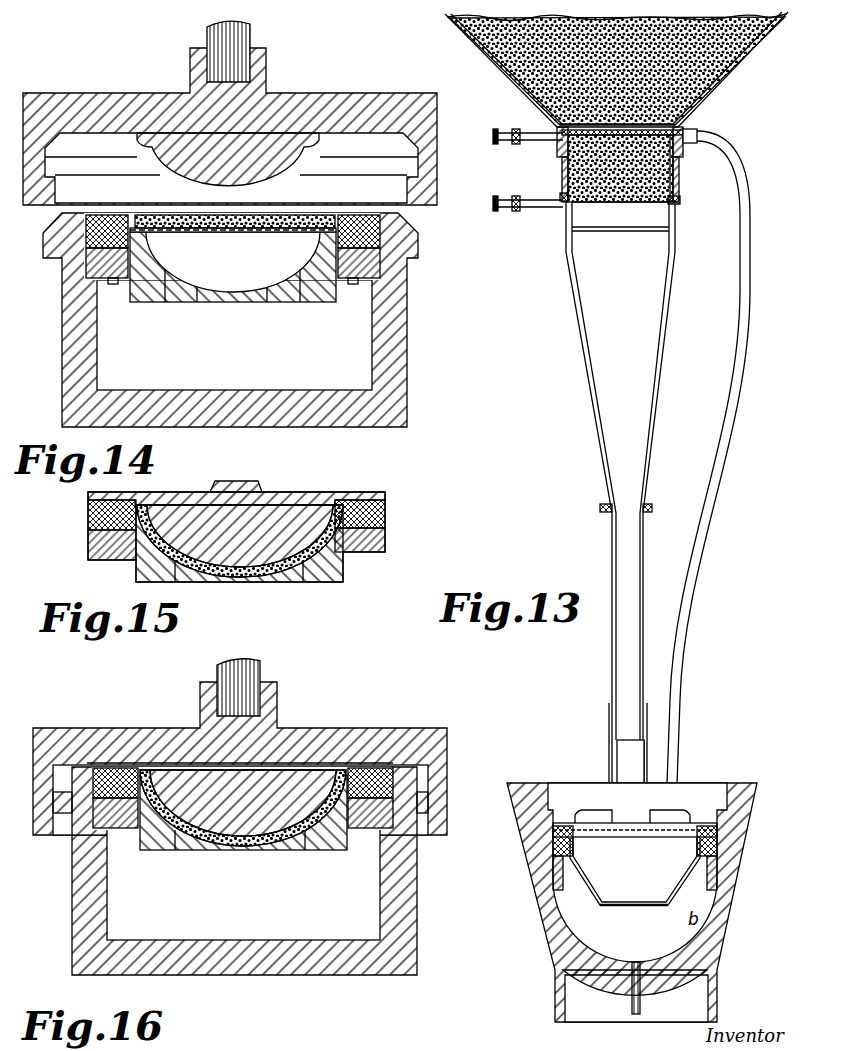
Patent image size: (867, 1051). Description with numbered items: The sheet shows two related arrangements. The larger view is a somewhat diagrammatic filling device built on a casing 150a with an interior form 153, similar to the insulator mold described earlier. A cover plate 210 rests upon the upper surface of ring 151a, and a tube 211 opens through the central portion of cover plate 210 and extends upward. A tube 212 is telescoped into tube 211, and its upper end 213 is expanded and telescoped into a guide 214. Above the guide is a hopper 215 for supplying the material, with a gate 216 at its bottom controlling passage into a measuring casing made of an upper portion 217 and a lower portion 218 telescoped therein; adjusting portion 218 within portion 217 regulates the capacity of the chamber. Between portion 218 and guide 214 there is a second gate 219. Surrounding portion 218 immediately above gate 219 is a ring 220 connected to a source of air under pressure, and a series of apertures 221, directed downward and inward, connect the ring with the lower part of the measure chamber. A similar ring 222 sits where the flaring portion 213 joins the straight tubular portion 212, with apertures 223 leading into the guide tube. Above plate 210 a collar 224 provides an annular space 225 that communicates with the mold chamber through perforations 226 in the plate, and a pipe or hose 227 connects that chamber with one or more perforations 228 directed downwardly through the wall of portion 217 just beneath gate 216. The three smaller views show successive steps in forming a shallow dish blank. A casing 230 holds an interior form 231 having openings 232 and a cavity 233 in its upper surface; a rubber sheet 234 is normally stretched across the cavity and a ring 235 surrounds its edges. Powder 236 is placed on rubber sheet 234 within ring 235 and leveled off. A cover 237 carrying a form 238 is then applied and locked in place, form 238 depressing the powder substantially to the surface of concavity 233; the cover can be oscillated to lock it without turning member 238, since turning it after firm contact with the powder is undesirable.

In FIG. 13, the casing 150a is at (733, 935).
In FIG. 13, the ring 151a is at (692, 852).
In FIG. 13, the interior form 153 is at (665, 907).
In FIG. 13, the cover plate 210 is at (560, 835).
In FIG. 13, the tube 211 is at (615, 758).
In FIG. 13, the tube 212 is at (612, 622).
In FIG. 13, the upper end 213 is at (661, 322).
In FIG. 13, the guide 214 is at (679, 224).
In FIG. 13, the hopper 215 is at (731, 70).
In FIG. 13, the gate 216 is at (538, 142).
In FIG. 13, the upper portion 217 is at (679, 166).
In FIG. 13, the lower portion 218 is at (679, 184).
In FIG. 13, the gate 219 is at (533, 209).
In FIG. 13, the ring 220 is at (680, 200).
In FIG. 13, the apertures 221 is at (563, 210).
In FIG. 13, the ring 222 is at (650, 504).
In FIG. 13, the apertures 223 is at (606, 514).
In FIG. 13, the collar 224 is at (597, 808).
In FIG. 13, the annular space 225 is at (682, 826).
In FIG. 13, the perforations 226 is at (607, 838).
In FIG. 13, the pipe or hose 227 is at (683, 686).
In FIG. 13, the perforations 228 is at (696, 130).
In FIG. 14, the casing 230 is at (397, 340).
In FIG. 16, the casing 230 is at (407, 883).
In FIG. 14, the interior form 231 is at (310, 290).
In FIG. 15, the interior form 231 is at (335, 578).
In FIG. 16, the interior form 231 is at (335, 851).
In FIG. 14, the openings 232 is at (197, 302).
In FIG. 15, the openings 232 is at (303, 580).
In FIG. 14, the cavity 233 is at (277, 292).
In FIG. 14, the rubber sheet 234 is at (165, 233).
In FIG. 14, the ring 235 is at (251, 317).
In FIG. 14, the powder 236 is at (250, 233).
In FIG. 15, the powder 236 is at (232, 568).
In FIG. 14, the cover 237 is at (425, 116).
In FIG. 14, the form 238 is at (277, 172).
In FIG. 15, the form 238 is at (285, 495).